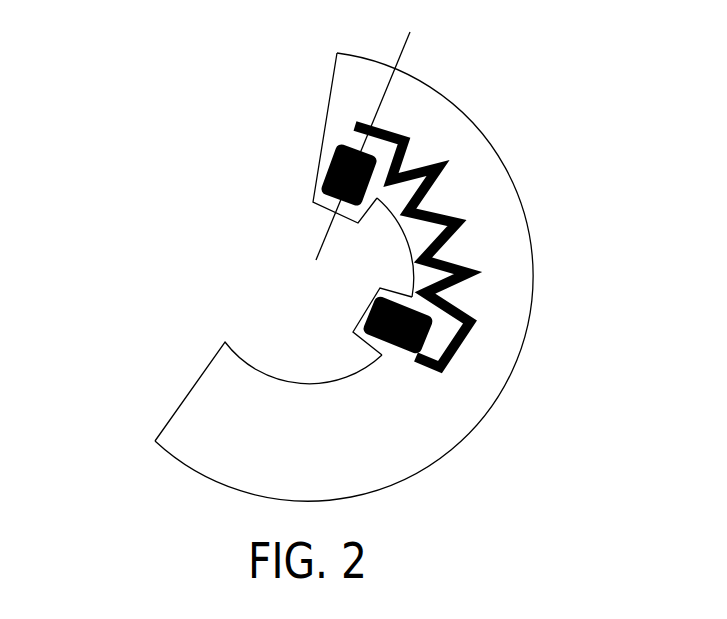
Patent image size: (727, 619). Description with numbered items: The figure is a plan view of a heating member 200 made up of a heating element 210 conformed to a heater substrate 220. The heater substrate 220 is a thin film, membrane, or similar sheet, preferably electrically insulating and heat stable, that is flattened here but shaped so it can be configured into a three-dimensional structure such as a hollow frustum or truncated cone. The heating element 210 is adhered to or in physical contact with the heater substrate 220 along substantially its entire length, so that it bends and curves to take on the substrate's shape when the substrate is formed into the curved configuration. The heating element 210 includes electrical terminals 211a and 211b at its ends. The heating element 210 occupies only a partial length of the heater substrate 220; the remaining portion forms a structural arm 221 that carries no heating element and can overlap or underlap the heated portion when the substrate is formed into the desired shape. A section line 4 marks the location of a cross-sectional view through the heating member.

The heating member 200 is at (128, 93).
The heating element 210 is at (451, 152).
The electrical terminal 211a is at (332, 206).
The electrical terminal 211b is at (362, 322).
The heater substrate 220 is at (518, 258).
The structural arm 221 is at (175, 378).
The section line 4- 4 is at (363, 15).